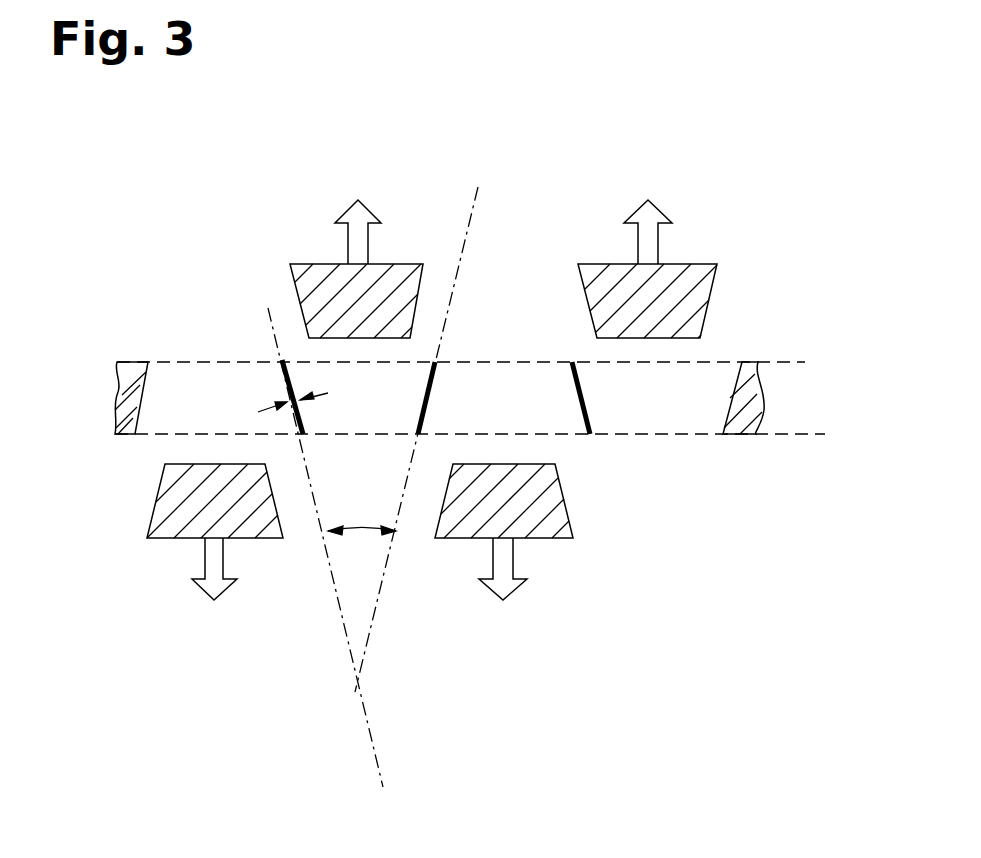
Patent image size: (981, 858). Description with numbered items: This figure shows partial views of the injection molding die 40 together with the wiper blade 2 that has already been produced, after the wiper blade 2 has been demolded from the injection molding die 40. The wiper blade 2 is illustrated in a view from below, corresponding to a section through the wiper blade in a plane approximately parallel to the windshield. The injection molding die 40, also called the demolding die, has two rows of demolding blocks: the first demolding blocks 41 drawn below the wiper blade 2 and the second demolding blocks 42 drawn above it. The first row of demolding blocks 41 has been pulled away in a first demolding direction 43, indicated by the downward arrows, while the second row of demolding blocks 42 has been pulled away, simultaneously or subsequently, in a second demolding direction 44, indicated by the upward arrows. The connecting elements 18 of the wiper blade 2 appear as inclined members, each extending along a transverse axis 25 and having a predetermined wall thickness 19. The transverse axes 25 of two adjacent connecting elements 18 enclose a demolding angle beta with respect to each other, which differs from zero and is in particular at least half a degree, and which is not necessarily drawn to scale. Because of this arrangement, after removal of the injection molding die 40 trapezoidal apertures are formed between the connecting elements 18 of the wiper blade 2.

The wiper blade 2 is at (718, 150).
The connecting element 18 is at (285, 381).
The wall thickness 19 is at (262, 403).
The transverse axis 25 is at (478, 188).
The injection molding die 40 is at (126, 324).
The first demolding block 41 is at (174, 540).
The second demolding block 42 is at (310, 278).
The first demolding direction 43 is at (203, 590).
The second demolding direction 44 is at (349, 216).
The demolding angle beta is at (358, 528).